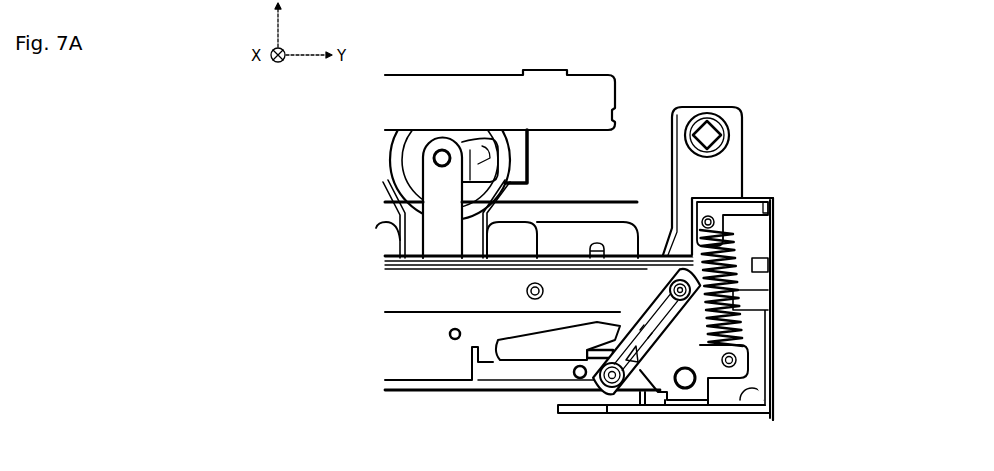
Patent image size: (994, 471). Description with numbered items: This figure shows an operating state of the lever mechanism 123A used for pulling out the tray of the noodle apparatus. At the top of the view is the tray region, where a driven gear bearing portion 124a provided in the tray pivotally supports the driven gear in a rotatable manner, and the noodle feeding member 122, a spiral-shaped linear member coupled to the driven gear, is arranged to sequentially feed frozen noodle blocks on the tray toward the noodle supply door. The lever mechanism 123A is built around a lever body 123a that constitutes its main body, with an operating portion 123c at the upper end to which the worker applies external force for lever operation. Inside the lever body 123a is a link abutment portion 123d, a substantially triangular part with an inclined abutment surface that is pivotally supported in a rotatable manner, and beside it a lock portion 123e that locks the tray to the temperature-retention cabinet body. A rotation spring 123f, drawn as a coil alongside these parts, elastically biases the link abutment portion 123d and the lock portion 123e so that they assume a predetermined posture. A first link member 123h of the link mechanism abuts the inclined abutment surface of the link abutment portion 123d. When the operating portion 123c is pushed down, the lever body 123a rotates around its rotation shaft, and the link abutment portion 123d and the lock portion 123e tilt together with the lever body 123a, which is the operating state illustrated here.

The noodle feeding member 122 is at (508, 168).
The driven gear bearing portion 124a is at (422, 163).
The lever mechanism 123A is at (755, 192).
The lever body 123a is at (776, 238).
The operating portion 123c is at (713, 106).
The link abutment portion 123d is at (659, 373).
The lock portion 123e is at (537, 358).
The rotation spring 123f is at (736, 285).
The first link member 123h is at (612, 388).